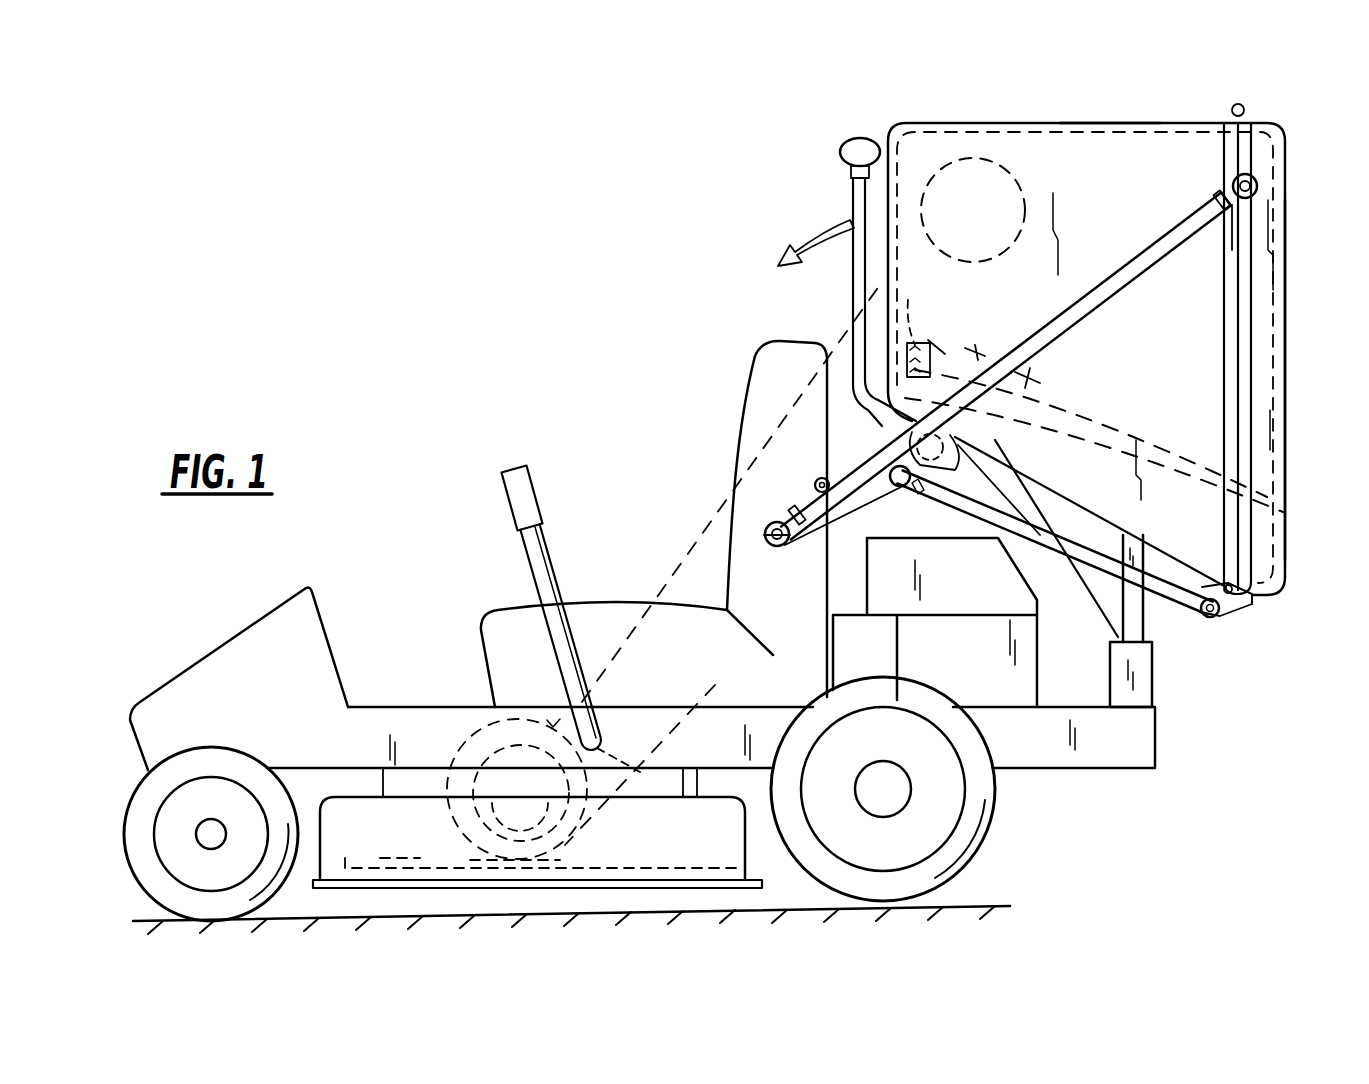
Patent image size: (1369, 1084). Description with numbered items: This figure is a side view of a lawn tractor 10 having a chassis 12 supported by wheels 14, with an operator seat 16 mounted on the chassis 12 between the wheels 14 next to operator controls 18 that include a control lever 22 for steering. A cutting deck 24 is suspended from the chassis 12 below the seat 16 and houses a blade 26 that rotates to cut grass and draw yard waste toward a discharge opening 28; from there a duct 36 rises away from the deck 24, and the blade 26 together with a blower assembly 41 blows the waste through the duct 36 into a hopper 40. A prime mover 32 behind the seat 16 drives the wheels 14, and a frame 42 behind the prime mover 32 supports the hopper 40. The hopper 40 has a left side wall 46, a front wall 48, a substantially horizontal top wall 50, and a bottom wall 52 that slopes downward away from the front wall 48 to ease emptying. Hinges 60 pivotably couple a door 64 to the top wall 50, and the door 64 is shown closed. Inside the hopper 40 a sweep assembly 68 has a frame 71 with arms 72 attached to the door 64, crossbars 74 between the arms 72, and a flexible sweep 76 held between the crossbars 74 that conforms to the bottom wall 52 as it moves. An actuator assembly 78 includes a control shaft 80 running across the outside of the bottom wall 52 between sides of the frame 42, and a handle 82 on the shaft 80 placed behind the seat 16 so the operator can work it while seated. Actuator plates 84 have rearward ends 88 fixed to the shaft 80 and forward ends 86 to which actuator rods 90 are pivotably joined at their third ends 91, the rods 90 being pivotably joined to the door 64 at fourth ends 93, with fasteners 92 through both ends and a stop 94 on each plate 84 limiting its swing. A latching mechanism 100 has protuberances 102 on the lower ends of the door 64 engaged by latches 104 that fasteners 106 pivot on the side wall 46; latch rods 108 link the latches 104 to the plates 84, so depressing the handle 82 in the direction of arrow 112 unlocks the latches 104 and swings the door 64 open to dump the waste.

The lawn tractor 10 is at (697, 213).
The chassis 12 is at (1158, 744).
The wheels 14 is at (132, 793).
The operator seat 16 is at (740, 417).
The operator controls 18 is at (513, 445).
The control levers 22 is at (532, 488).
The cutting deck 24 is at (372, 836).
The blades 26 is at (665, 870).
The discharge opening 28 is at (498, 816).
The prime mover 32 is at (990, 590).
The duct 36 is at (692, 557).
The hopper 40 is at (1005, 92).
The blower assembly 41 is at (457, 834).
The frame 42 is at (1097, 612).
The left side wall 46 is at (1152, 142).
The front wall 48 is at (850, 174).
The top wall 50 is at (1130, 99).
The bottom wall 52 is at (1072, 524).
The hinges 60 is at (1244, 105).
The door 64 is at (1290, 308).
The sweep assembly 68 is at (1124, 414).
The frame 71 is at (984, 354).
The arms 72 is at (1040, 380).
The crossbars 74 is at (936, 341).
The sweep 76 is at (914, 313).
The actuator assembly 78 is at (1176, 669).
The control shaft 80 is at (962, 432).
The handle 82 is at (853, 200).
The actuator plates 84 is at (858, 506).
The forward end 86 is at (787, 543).
The rearward end 88 is at (1000, 466).
The actuator rods 90 is at (1185, 228).
The third end 91 is at (765, 534).
The fasteners 92 is at (782, 516).
The fourth end 93 is at (1260, 186).
The stop 94 is at (820, 480).
The latching mechanism 100 is at (1263, 620).
The protuberances 102 is at (1254, 597).
The latches 104 is at (1218, 618).
The fasteners 106 is at (1222, 583).
The latch rods 108 is at (1055, 492).
The arrow 112 is at (833, 222).